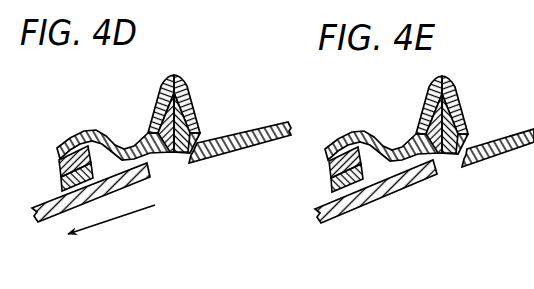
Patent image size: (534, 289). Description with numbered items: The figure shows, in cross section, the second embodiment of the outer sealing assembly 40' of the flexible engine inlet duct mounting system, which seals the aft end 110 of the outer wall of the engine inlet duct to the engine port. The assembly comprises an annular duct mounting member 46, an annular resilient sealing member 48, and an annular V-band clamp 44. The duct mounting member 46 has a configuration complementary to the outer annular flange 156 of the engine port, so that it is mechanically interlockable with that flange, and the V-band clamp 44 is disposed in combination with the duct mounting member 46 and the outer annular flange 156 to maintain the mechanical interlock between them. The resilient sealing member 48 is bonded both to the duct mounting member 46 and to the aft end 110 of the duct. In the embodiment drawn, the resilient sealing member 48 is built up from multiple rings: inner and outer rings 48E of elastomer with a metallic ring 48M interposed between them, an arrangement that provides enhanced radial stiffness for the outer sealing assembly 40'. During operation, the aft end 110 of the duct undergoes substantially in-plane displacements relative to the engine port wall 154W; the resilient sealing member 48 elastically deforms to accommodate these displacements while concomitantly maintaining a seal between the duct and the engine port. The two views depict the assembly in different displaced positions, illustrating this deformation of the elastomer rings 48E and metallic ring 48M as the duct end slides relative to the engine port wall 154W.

In FIG. 4D, the annular duct mounting member 46 is at (121, 147).
In FIG. 4D, the annular V-band clamp 44 is at (189, 94).
In FIG. 4D, the outer sealing assembly 40' is at (240, 120).
In FIG. 4D, the annular resilient sealing member 48 is at (40, 173).
In FIG. 4E, the elastomer rings 48E is at (330, 172).
In FIG. 4E, the metallic ring 48M is at (332, 178).
In FIG. 4E, the outer annular flange 156 is at (472, 124).
In FIG. 4E, the aft end of the outer wall 110 is at (372, 199).
In FIG. 4E, the engine port wall 154W is at (486, 161).